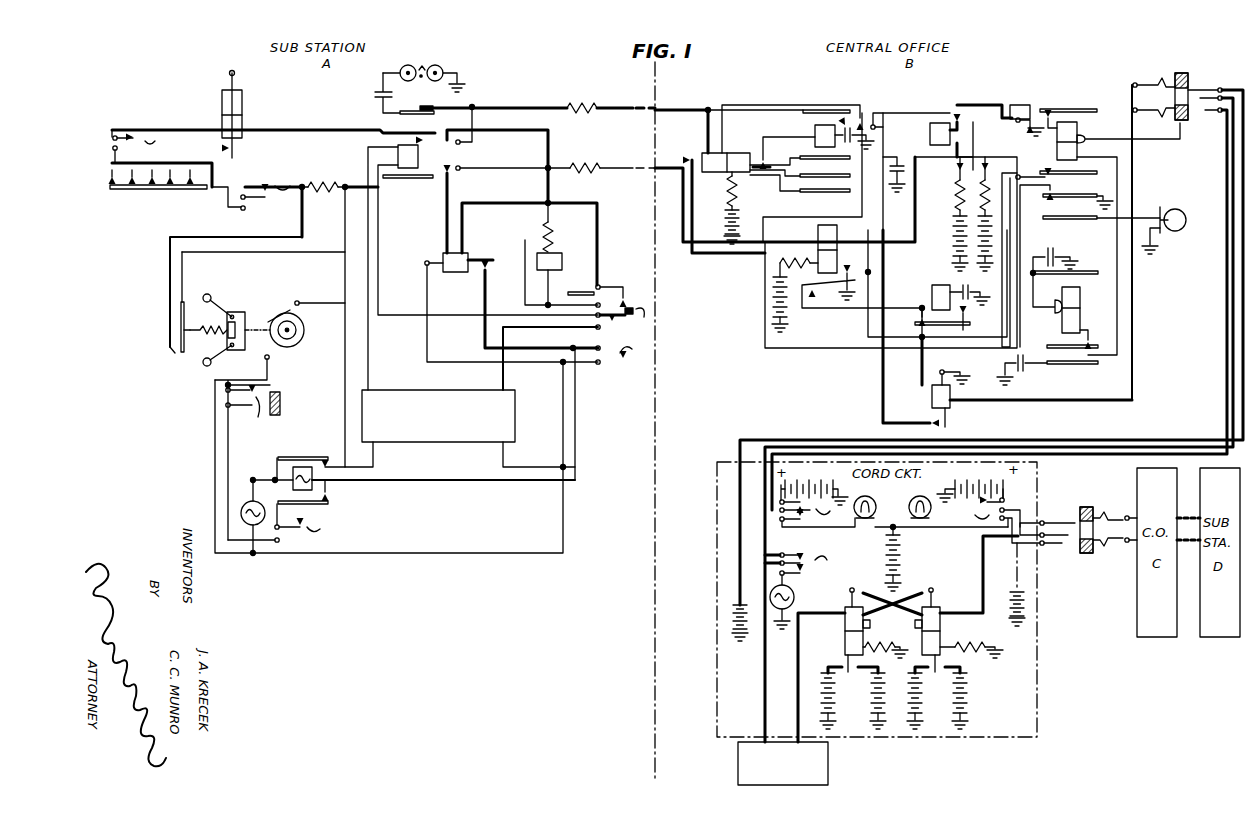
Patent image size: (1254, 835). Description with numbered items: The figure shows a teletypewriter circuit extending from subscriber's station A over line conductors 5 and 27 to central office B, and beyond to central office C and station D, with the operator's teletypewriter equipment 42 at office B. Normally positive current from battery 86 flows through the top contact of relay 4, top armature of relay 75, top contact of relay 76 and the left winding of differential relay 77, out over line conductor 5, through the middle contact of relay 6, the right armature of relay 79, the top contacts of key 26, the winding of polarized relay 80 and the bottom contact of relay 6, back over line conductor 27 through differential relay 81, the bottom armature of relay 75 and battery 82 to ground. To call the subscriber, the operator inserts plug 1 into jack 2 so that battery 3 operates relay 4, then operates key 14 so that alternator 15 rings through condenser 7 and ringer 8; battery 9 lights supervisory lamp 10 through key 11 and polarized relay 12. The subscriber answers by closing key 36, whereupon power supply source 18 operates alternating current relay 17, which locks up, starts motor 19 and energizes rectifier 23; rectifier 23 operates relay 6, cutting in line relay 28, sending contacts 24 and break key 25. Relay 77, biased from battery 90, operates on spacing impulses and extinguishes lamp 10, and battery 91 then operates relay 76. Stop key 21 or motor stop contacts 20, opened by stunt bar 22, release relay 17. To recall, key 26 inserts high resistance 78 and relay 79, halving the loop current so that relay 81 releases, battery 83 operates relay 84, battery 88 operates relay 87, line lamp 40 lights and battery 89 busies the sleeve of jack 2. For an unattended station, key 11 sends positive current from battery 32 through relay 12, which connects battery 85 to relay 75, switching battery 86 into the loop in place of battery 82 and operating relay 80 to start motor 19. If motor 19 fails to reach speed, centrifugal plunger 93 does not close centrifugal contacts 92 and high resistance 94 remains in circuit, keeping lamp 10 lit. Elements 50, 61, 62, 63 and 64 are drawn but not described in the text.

The plug 1 is at (1208, 81).
The jack 2 is at (1175, 74).
The battery 3 is at (737, 636).
The relay 4 is at (1066, 122).
The line conductor 5 is at (662, 110).
The relay 6 is at (418, 152).
The condenser 7 is at (373, 92).
The ringer 8 is at (437, 66).
The battery 9 is at (901, 556).
The supervisory lamp 10 is at (871, 503).
The key 11 is at (800, 511).
The polarized relay 12 is at (932, 400).
The key 14 is at (805, 572).
The alternator 15 is at (797, 595).
The alternating current relay 17 is at (310, 467).
The power supply source 18 is at (253, 501).
The motor 19 is at (304, 329).
The motor stop contacts 20 is at (260, 410).
The local stop key 21 is at (306, 531).
The stunt bar 22 is at (280, 401).
The rectifier 23 is at (515, 421).
The sending contacts 24 is at (203, 158).
The break key 25 is at (272, 202).
The key 26 is at (642, 311).
The line conductor 27 is at (672, 170).
The line relay 28 is at (242, 97).
The battery 32 is at (812, 512).
The key 36 is at (624, 359).
The line lamp 40 is at (1187, 220).
The teletypewriter equipment 42 is at (828, 758).
The battery 50 is at (966, 698).
The polarized relay 61 is at (845, 627).
The battery 62 is at (872, 684).
The polarized relay 63 is at (940, 627).
The battery 64 is at (916, 701).
The relay 75 is at (940, 122).
The relay 76 is at (815, 131).
The differential relay 77 is at (720, 169).
The high resistance 78 is at (551, 240).
The relay 79 is at (551, 273).
The polarized relay 80 is at (423, 249).
The differential relay 81 is at (818, 235).
The battery 82 is at (953, 250).
The battery 83 is at (972, 299).
The relay 84 is at (932, 293).
The battery 85 is at (905, 181).
The battery 86 is at (992, 223).
The relay 87 is at (1080, 315).
The battery 88 is at (1048, 255).
The battery 89 is at (1031, 367).
The battery 90 is at (741, 210).
The battery 91 is at (875, 126).
The centrifugal contacts 92 is at (178, 312).
The centrifugal plunger 93 is at (188, 340).
The high resistance 94 is at (325, 180).